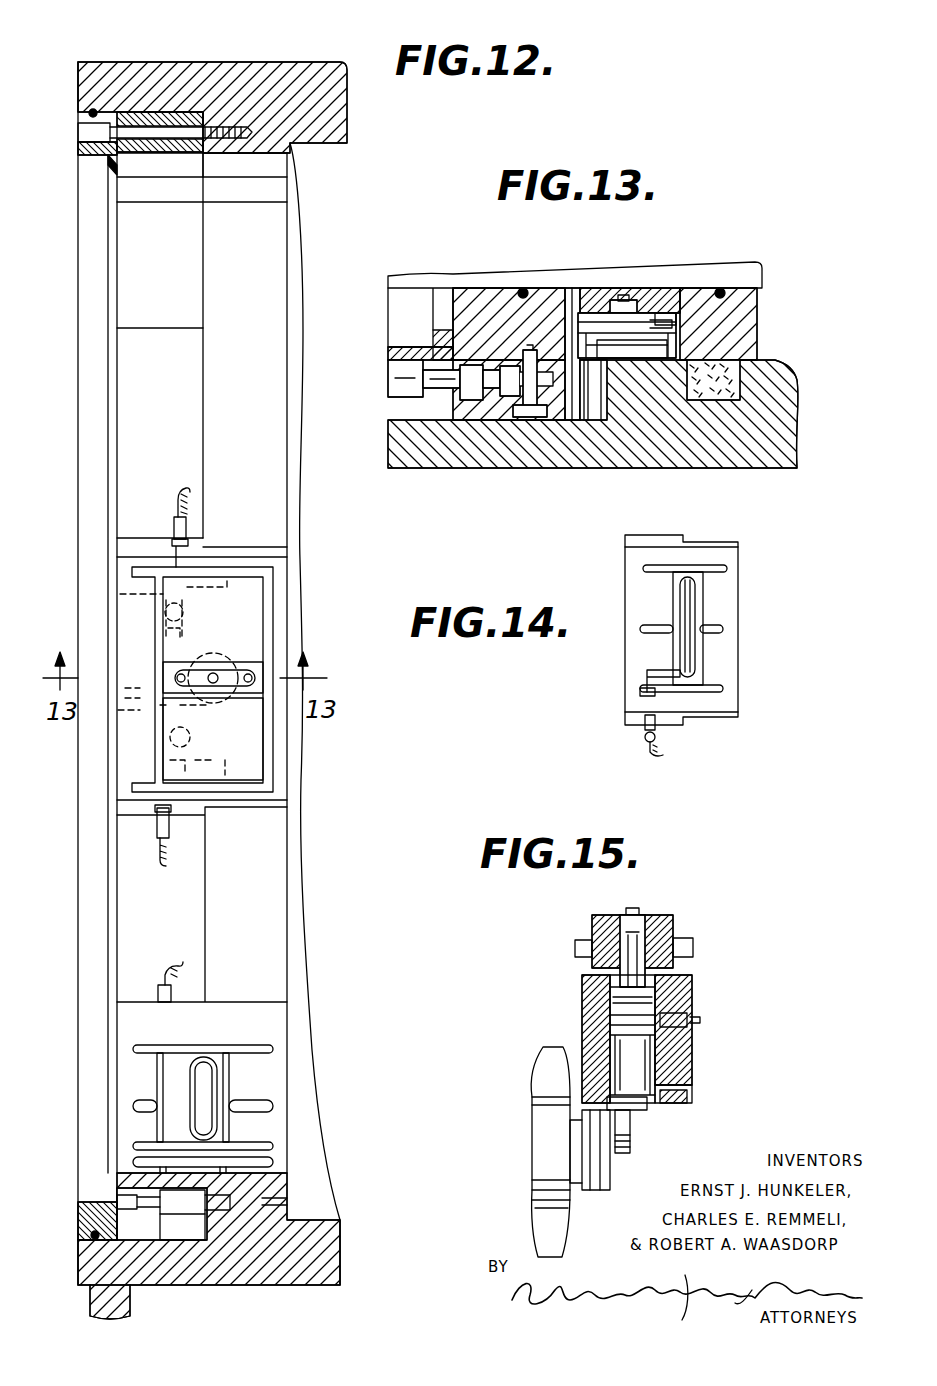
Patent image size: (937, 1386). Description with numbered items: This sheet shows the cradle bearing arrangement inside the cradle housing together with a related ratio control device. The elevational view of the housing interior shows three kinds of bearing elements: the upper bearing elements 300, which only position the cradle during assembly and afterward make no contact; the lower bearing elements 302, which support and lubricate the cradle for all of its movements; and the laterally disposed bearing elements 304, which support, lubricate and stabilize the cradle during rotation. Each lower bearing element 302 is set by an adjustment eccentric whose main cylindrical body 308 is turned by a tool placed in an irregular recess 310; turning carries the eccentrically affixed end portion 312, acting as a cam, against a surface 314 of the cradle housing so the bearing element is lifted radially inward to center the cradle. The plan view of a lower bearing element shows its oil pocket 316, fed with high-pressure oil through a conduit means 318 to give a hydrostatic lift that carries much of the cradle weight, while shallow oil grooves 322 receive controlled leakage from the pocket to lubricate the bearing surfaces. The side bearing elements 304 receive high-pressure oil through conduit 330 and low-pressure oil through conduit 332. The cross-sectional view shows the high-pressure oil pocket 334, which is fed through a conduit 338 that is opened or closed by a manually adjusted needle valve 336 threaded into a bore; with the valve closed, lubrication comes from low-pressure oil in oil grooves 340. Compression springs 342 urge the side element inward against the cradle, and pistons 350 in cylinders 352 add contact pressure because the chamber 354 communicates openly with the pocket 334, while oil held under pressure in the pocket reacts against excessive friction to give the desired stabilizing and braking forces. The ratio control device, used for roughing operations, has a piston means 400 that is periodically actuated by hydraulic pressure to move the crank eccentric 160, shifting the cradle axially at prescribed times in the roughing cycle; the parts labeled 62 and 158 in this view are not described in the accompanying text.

In FIG. 12, the upper bearing element 300 is at (232, 253).
In FIG. 12, the lower bearing element 302 is at (296, 1081).
In FIG. 14, the lower bearing element 302 is at (648, 583).
In FIG. 12, the side bearing element 304 is at (142, 532).
In FIG. 13, the side bearing element 304 is at (768, 347).
In FIG. 12, the main cylindrical body 308 is at (185, 1240).
In FIG. 12, the irregular recess 310 is at (118, 1200).
In FIG. 12, the eccentrically affixed end portion 312 is at (217, 1207).
In FIG. 12, the surface of the cradle housing 314 is at (292, 1203).
In FIG. 12, the oil pocket 316 is at (200, 1065).
In FIG. 14, the oil pocket 316 is at (690, 600).
In FIG. 12, the conduit means 318 is at (161, 986).
In FIG. 14, the conduit means 318 is at (647, 712).
In FIG. 14, the shallow oil grooves 322 is at (640, 629).
In FIG. 12, the high-pressure conduit 330 is at (190, 528).
In FIG. 12, the low-pressure conduit 332 is at (170, 820).
In FIG. 12, the high-pressure oil pocket 334 is at (247, 672).
In FIG. 13, the high-pressure oil pocket 334 is at (648, 316).
In FIG. 12, the needle valve 336 is at (130, 680).
In FIG. 13, the needle valve 336 is at (493, 400).
In FIG. 12, the conduit 338 is at (155, 605).
In FIG. 13, the conduit 338 is at (545, 345).
In FIG. 12, the oil grooves 340 is at (258, 567).
In FIG. 12, the compression springs 342 is at (211, 739).
In FIG. 13, the compression springs 342 is at (703, 385).
In FIG. 13, the pistons 350 is at (625, 340).
In FIG. 12, the cylinders 352 is at (215, 702).
In FIG. 13, the cylinders 352 is at (676, 322).
In FIG. 13, the chamber 354 is at (665, 320).
In FIG. 15, the piston means 400 is at (655, 1060).
In FIG. 15, the stem 158 is at (635, 1140).
In FIG. 15, the crank eccentric 160 is at (598, 1190).
In FIG. 15, the handle 62 is at (548, 1152).